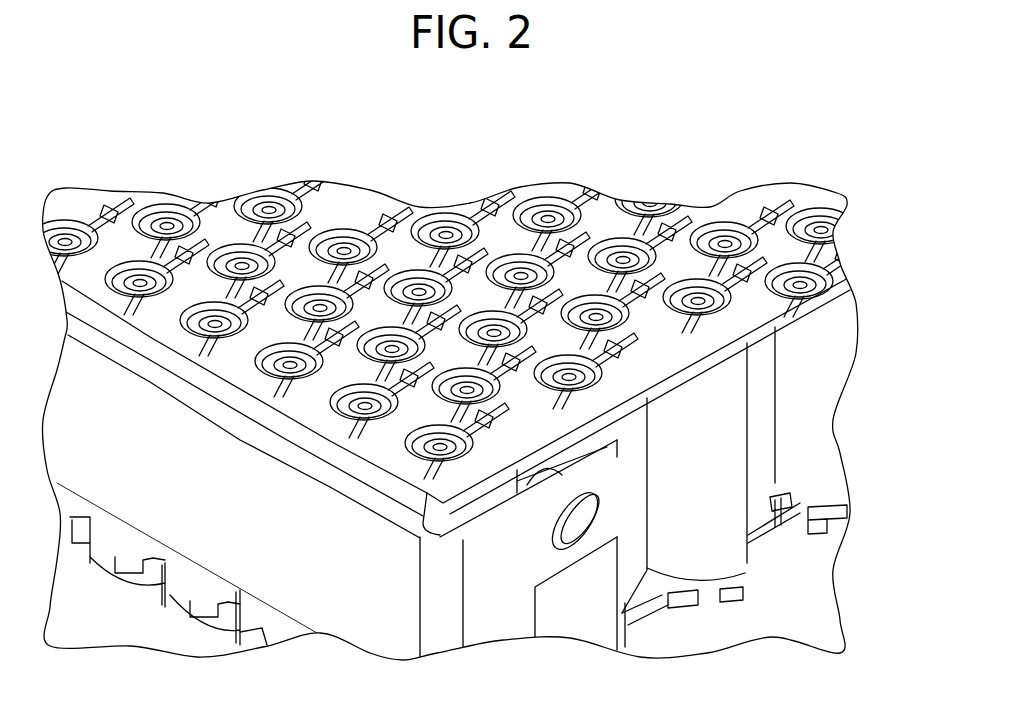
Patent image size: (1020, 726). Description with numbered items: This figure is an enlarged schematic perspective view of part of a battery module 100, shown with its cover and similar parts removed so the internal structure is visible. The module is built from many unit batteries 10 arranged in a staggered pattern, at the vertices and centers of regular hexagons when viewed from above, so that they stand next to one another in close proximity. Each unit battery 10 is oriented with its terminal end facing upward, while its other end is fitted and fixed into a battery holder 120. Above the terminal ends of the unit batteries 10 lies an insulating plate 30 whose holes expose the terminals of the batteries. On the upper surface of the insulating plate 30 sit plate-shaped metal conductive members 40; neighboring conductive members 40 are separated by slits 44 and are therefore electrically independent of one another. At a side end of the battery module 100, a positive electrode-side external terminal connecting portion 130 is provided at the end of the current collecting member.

The battery module 100 is at (256, 166).
The conductive member 40 is at (817, 268).
The insulating plate 30 is at (843, 290).
The slit 44 is at (636, 361).
The unit battery 10 is at (708, 508).
The battery holder 120 is at (706, 583).
The positive electrode-side external terminal connecting portion 130 is at (497, 623).